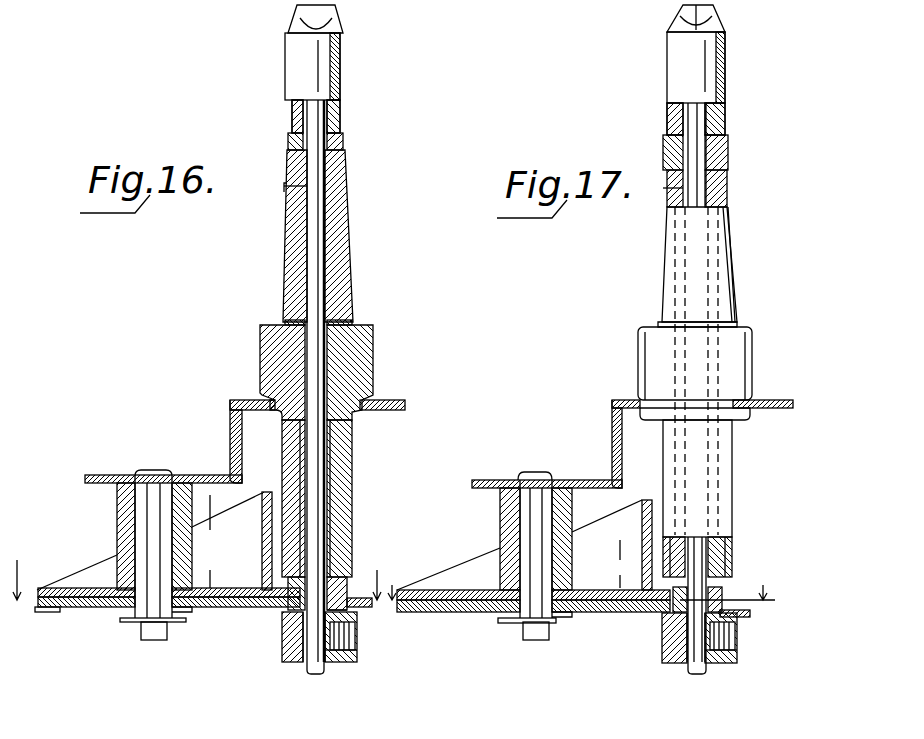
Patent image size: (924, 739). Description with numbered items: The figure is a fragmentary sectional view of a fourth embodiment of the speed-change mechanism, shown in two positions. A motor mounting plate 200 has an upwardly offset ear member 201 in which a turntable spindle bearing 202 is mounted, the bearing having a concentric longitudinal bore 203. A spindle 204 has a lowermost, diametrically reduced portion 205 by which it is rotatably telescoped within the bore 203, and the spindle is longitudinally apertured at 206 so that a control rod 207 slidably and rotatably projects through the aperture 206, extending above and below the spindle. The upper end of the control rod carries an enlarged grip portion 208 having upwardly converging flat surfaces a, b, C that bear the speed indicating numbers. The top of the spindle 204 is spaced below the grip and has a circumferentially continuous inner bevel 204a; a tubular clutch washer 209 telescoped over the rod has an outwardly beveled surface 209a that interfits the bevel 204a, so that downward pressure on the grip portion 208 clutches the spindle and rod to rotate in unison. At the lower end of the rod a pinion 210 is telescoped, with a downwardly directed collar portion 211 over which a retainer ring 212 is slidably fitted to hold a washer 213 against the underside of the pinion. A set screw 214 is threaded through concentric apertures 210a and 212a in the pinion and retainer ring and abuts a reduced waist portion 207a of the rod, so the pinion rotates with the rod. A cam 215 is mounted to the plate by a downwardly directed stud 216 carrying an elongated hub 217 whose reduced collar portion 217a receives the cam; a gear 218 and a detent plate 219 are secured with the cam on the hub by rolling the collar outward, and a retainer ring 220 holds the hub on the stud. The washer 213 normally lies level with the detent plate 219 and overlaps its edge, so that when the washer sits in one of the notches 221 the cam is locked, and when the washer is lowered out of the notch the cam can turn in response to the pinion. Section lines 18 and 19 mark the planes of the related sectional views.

In FIG. 16, the motor mounting plate 200 is at (202, 478).
In FIG. 17, the motor mounting plate 200 is at (596, 480).
In FIG. 16, the ear member 201 is at (383, 400).
In FIG. 17, the ear member 201 is at (796, 375).
In FIG. 16, the turntable spindle bearing 202 is at (261, 339).
In FIG. 17, the turntable spindle bearing 202 is at (640, 360).
In FIG. 16, the bore 203 is at (328, 456).
In FIG. 17, the bore 203 is at (712, 548).
In FIG. 16, the spindle 204 is at (341, 212).
In FIG. 17, the spindle 204 is at (726, 204).
In FIG. 16, the inner bevel 204a is at (340, 120).
In FIG. 17, the inner bevel 204a is at (724, 121).
In FIG. 16, the diametrically reduced portion 205 is at (340, 485).
In FIG. 17, the diametrically reduced portion 205 is at (728, 576).
In FIG. 16, the aperture 206 is at (286, 190).
In FIG. 17, the aperture 206 is at (686, 185).
In FIG. 16, the control rod 207 is at (320, 262).
In FIG. 17, the control rod 207 is at (700, 171).
In FIG. 16, the waist portion 207a is at (311, 676).
In FIG. 17, the waist portion 207a is at (694, 676).
In FIG. 16, the grip portion 208 is at (341, 72).
In FIG. 17, the grip portion 208 is at (726, 74).
In FIG. 16, the clutch washer 209 is at (292, 118).
In FIG. 17, the clutch washer 209 is at (667, 117).
In FIG. 16, the outwardly beveled surface 209a is at (290, 144).
In FIG. 17, the outwardly beveled surface 209a is at (668, 150).
In FIG. 16, the pinion 210 is at (340, 570).
In FIG. 17, the pinion 210 is at (672, 598).
In FIG. 16, the aperture 210a is at (345, 662).
In FIG. 16, the collar portion 211 is at (306, 660).
In FIG. 17, the collar portion 211 is at (686, 665).
In FIG. 16, the retainer ring 212 is at (285, 642).
In FIG. 17, the retainer ring 212 is at (663, 662).
In FIG. 16, the aperture 212a is at (346, 656).
In FIG. 17, the aperture 212a is at (736, 652).
In FIG. 16, the washer 213 is at (356, 608).
In FIG. 17, the washer 213 is at (750, 615).
In FIG. 16, the set screw 214 is at (356, 641).
In FIG. 17, the set screw 214 is at (732, 640).
In FIG. 16, the cam 215 is at (226, 564).
In FIG. 17, the cam 215 is at (524, 545).
In FIG. 16, the stud 216 is at (162, 564).
In FIG. 17, the stud 216 is at (530, 540).
In FIG. 16, the hub 217 is at (117, 515).
In FIG. 17, the hub 217 is at (500, 517).
In FIG. 16, the collar portion 217a is at (190, 611).
In FIG. 17, the collar portion 217a is at (570, 613).
In FIG. 16, the gear 218 is at (90, 603).
In FIG. 17, the gear 218 is at (440, 612).
In FIG. 16, the detent plate 219 is at (110, 600).
In FIG. 17, the detent plate 219 is at (440, 650).
In FIG. 16, the retainer ring 220 is at (136, 622).
In FIG. 17, the retainer ring 220 is at (518, 624).
In FIG. 16, the notches 221 is at (42, 612).
In FIG. 16, the section line 18 is at (203, 572).
In FIG. 17, the section line 19 is at (583, 584).
In FIG. 16, the flat surface a is at (330, 12).
In FIG. 17, the flat surface a is at (677, 27).
In FIG. 16, the flat surface b is at (338, 29).
In FIG. 17, the flat surface b is at (713, 19).
In FIG. 16, the flat surface C is at (298, 30).
In FIG. 17, the flat surface C is at (678, 17).